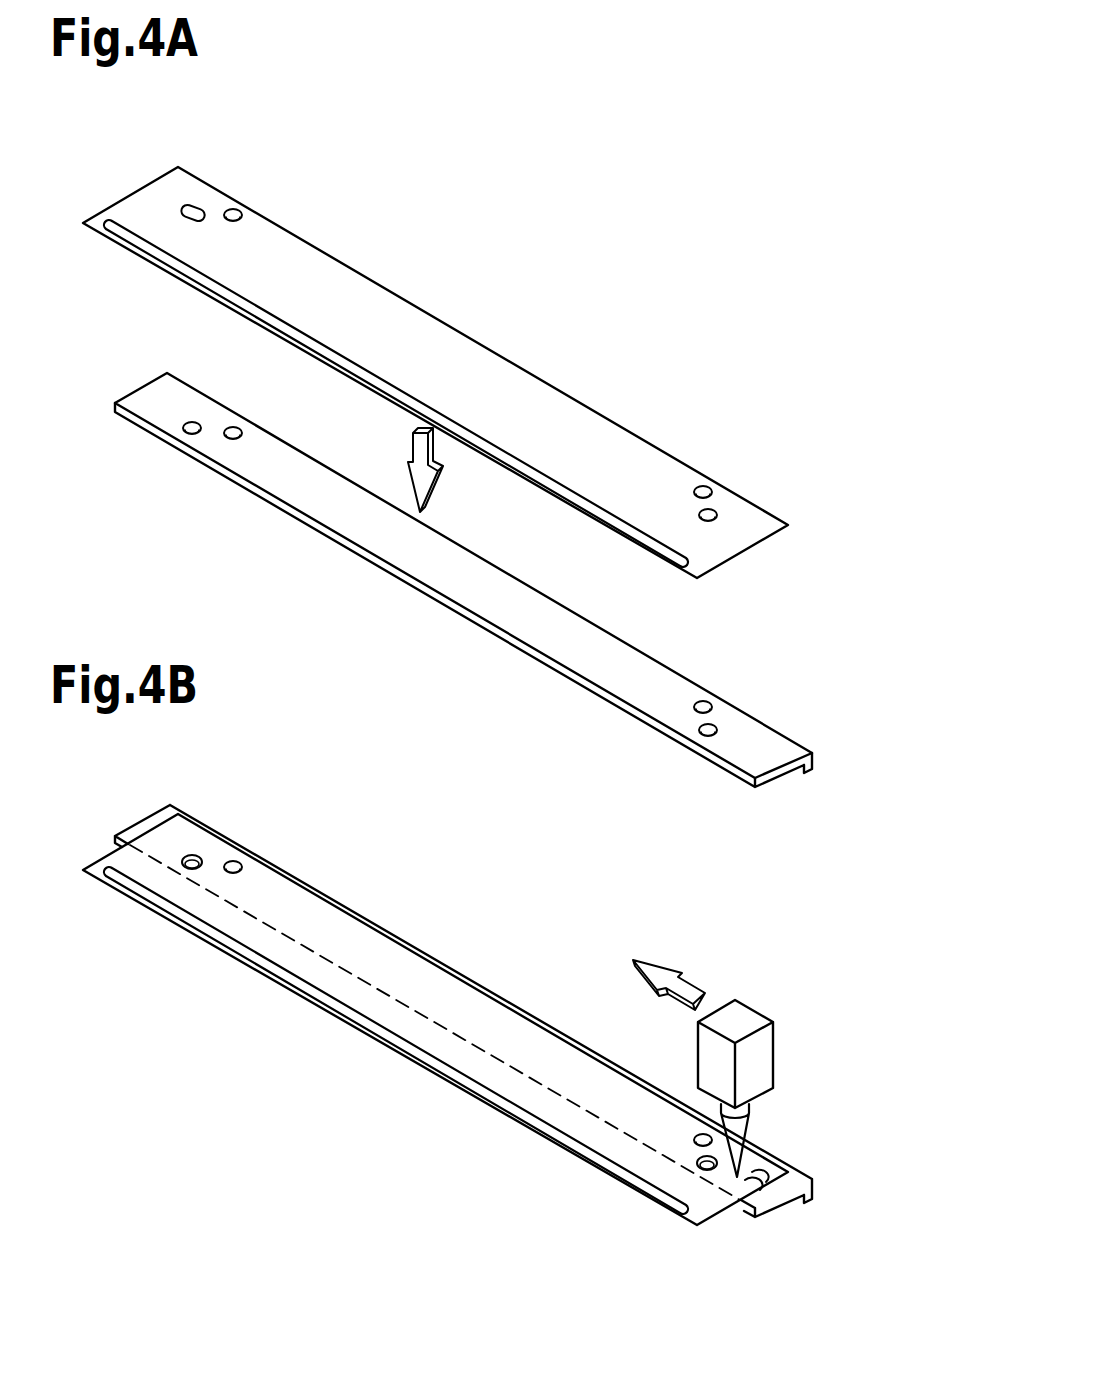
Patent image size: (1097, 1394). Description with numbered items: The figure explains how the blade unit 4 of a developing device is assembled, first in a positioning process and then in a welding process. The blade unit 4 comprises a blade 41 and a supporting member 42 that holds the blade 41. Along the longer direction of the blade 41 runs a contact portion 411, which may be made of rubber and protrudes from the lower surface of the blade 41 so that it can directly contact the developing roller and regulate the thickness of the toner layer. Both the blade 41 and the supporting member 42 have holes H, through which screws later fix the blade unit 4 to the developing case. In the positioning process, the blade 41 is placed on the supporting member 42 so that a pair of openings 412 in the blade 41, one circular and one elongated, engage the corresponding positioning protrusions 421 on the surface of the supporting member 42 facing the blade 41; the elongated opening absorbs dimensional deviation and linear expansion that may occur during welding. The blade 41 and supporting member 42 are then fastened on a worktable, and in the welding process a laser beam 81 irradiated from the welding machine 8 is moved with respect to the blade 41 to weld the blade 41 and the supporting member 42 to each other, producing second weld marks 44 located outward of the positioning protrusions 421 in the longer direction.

In FIG. 4B, the blade unit 4 is at (461, 1026).
In FIG. 4A, the blade 41 is at (418, 315).
In FIG. 4B, the blade 41 is at (347, 930).
In FIG. 4A, the contact portion 411 is at (390, 388).
In FIG. 4B, the contact portion 411 is at (420, 1053).
In FIG. 4A, the openings 412 is at (196, 208).
In FIG. 4B, the openings 412 is at (195, 858).
In FIG. 4A, the supporting member 42 is at (435, 573).
In FIG. 4B, the supporting member 42 is at (143, 827).
In FIG. 4A, the positioning protrusion 421 is at (192, 422).
In FIG. 4B, the positioning protrusion 421 is at (188, 856).
In FIG. 4B, the second weld marks 44 is at (758, 1180).
In FIG. 4B, the welding machine 8 is at (748, 1012).
In FIG. 4B, the laser beam 81 is at (748, 1124).
In FIG. 4A, the holes H is at (233, 210).
In FIG. 4B, the holes H is at (236, 864).